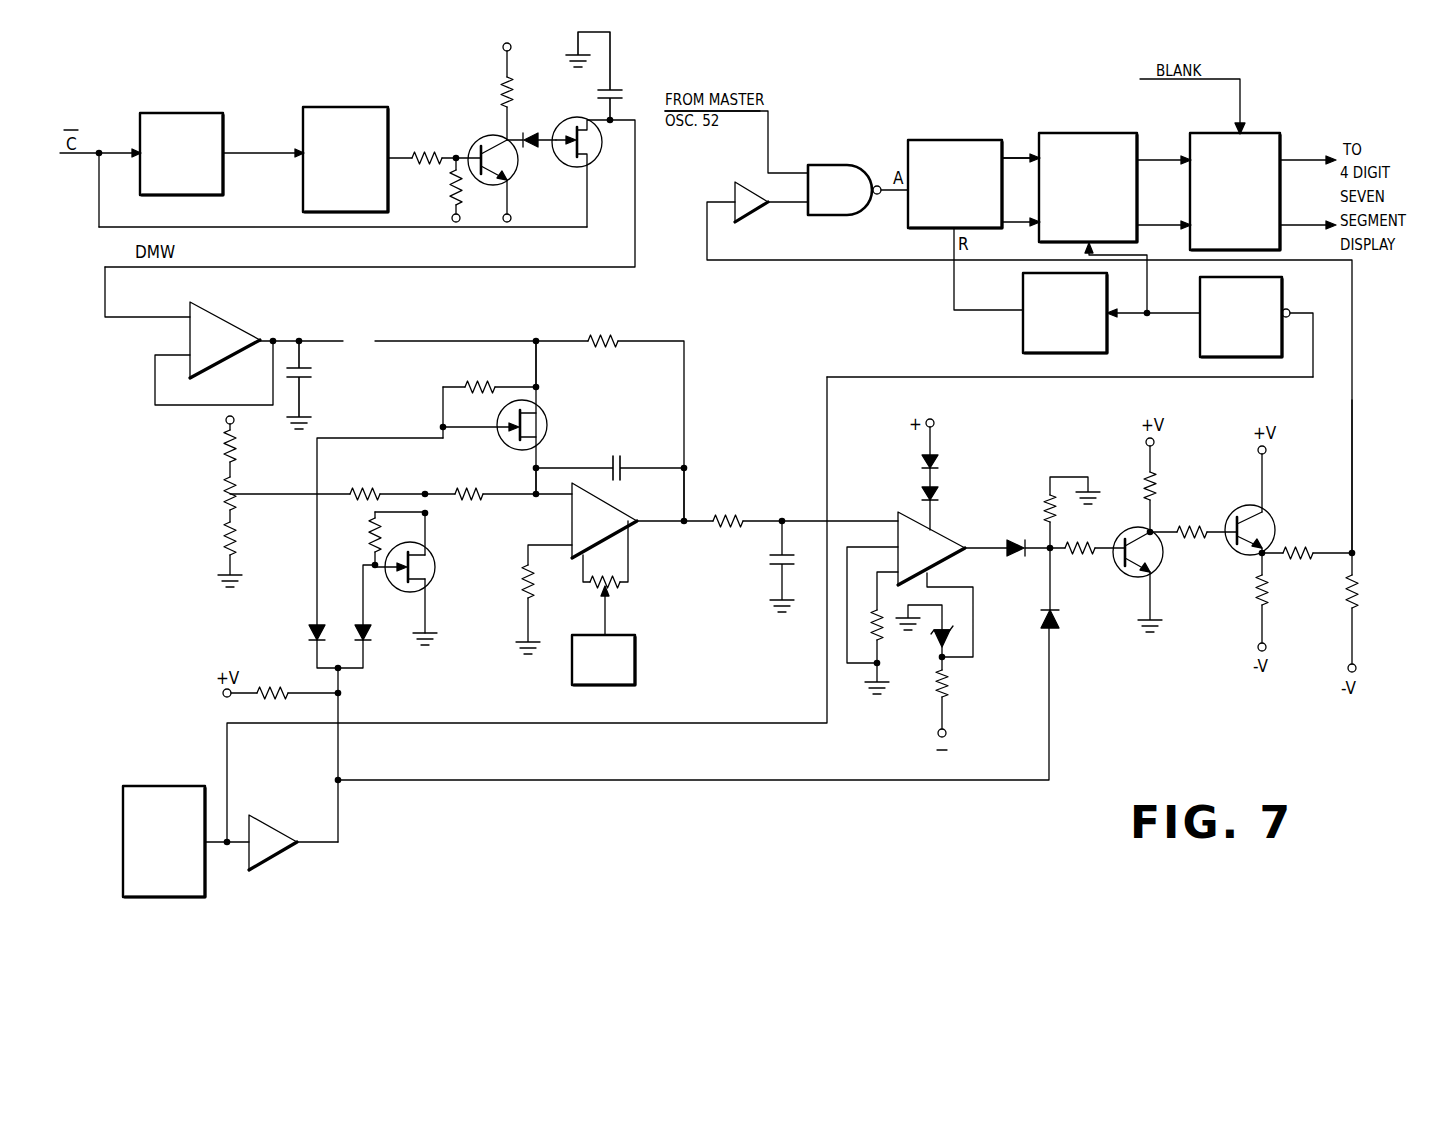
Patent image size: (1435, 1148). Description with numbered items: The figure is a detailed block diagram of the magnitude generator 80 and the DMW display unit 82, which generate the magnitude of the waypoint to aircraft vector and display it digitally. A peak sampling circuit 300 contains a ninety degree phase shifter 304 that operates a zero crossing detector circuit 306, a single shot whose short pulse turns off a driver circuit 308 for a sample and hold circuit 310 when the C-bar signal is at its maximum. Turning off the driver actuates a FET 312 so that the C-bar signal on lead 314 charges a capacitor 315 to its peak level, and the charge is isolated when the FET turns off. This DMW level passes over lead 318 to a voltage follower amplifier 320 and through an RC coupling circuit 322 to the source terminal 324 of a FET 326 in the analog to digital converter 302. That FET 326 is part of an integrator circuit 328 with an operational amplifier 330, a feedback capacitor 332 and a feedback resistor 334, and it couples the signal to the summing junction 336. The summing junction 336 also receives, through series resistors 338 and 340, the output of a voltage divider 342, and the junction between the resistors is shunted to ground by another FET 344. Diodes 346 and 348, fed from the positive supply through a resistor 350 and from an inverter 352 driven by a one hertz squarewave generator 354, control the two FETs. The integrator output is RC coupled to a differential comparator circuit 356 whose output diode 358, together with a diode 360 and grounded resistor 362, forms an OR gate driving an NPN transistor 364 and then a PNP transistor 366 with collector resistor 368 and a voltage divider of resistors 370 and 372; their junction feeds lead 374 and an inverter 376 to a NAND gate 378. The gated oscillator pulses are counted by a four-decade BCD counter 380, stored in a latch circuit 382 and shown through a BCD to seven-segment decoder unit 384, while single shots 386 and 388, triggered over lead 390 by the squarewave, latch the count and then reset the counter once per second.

The peak sampling circuit 300 is at (279, 108).
The analog to digital converter 302 is at (715, 438).
The 90° phase shifter 304 is at (222, 113).
The zero crossing detector circuit 306 is at (380, 107).
The driver circuit 308 is at (471, 144).
The sample and hold circuit 310 is at (567, 118).
The FET 312 is at (571, 166).
The lead 314 is at (325, 228).
The capacitor 315 is at (615, 92).
The lead 318 is at (637, 265).
The voltage follower amplifier 320 is at (249, 326).
The RC coupling circuit 322 is at (328, 360).
The source terminal 324 is at (546, 388).
The FET 326 is at (548, 426).
The integrator circuit 328 is at (648, 535).
The operational amplifier 330 is at (625, 516).
The feedback capacitor 332 is at (626, 460).
The feedback resistor 334 is at (620, 336).
The summing junction 336 is at (534, 492).
The resistor 338 is at (467, 490).
The resistor 340 is at (366, 490).
The voltage divider 342 is at (222, 495).
The FET 344 is at (436, 578).
The diode 346 is at (306, 634).
The diode 348 is at (368, 642).
The resistor 350 is at (277, 688).
The inverter 352 is at (281, 860).
The 1 Hz squarewave generator 354 is at (178, 786).
The differential comparator circuit 356 is at (951, 536).
The diode 358 is at (1013, 558).
The diode 360 is at (1058, 630).
The resistor 362 is at (1046, 506).
The NPN transistor 364 is at (830, 782).
The PNP transistor 366 is at (1239, 513).
The collector resistor 368 is at (1258, 596).
The resistor 370 is at (1294, 548).
The resistor 372 is at (1343, 597).
The lead 374 is at (1354, 514).
The inverter 376 is at (751, 222).
The NAND gate 378 is at (835, 165).
The four-decade BCD counter 380 is at (938, 140).
The latch circuit 382 is at (1089, 133).
The BCD to seven-segment decoder unit 384 is at (1273, 133).
The single shot 386 is at (1200, 355).
The single shot 388 is at (1023, 352).
The lead 390 is at (1020, 378).
The magnitude generator 80 is at (448, 307).
The DMW display unit 82 is at (1026, 114).